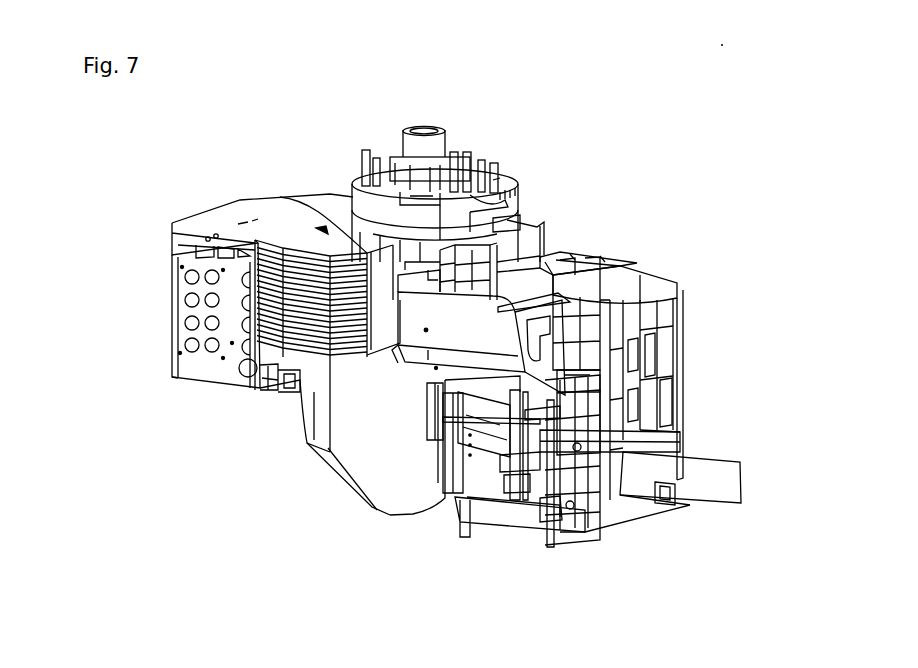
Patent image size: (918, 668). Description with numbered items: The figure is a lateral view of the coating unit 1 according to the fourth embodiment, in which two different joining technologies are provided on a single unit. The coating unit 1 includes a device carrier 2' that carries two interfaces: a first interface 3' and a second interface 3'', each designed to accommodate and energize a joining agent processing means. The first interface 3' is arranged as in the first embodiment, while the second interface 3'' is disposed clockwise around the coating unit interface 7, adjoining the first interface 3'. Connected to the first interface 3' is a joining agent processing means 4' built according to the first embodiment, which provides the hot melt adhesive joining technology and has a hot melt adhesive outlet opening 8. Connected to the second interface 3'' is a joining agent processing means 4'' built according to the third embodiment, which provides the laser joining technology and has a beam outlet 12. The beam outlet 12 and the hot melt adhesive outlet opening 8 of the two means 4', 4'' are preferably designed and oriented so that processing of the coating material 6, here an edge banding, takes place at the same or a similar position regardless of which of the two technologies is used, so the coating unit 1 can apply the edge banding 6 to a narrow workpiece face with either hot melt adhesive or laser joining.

The coating unit 1 is at (162, 192).
The second interface 3'' is at (286, 254).
The coating unit interface 7 is at (420, 212).
The first interface 3' is at (594, 231).
The device carrier 2' is at (638, 345).
The joining agent processing means 4'' is at (321, 479).
The beam outlet 12 is at (415, 514).
The hot melt adhesive outlet opening 8 is at (453, 338).
The joining agent processing means 4' is at (610, 490).
The coating material 6 is at (663, 480).